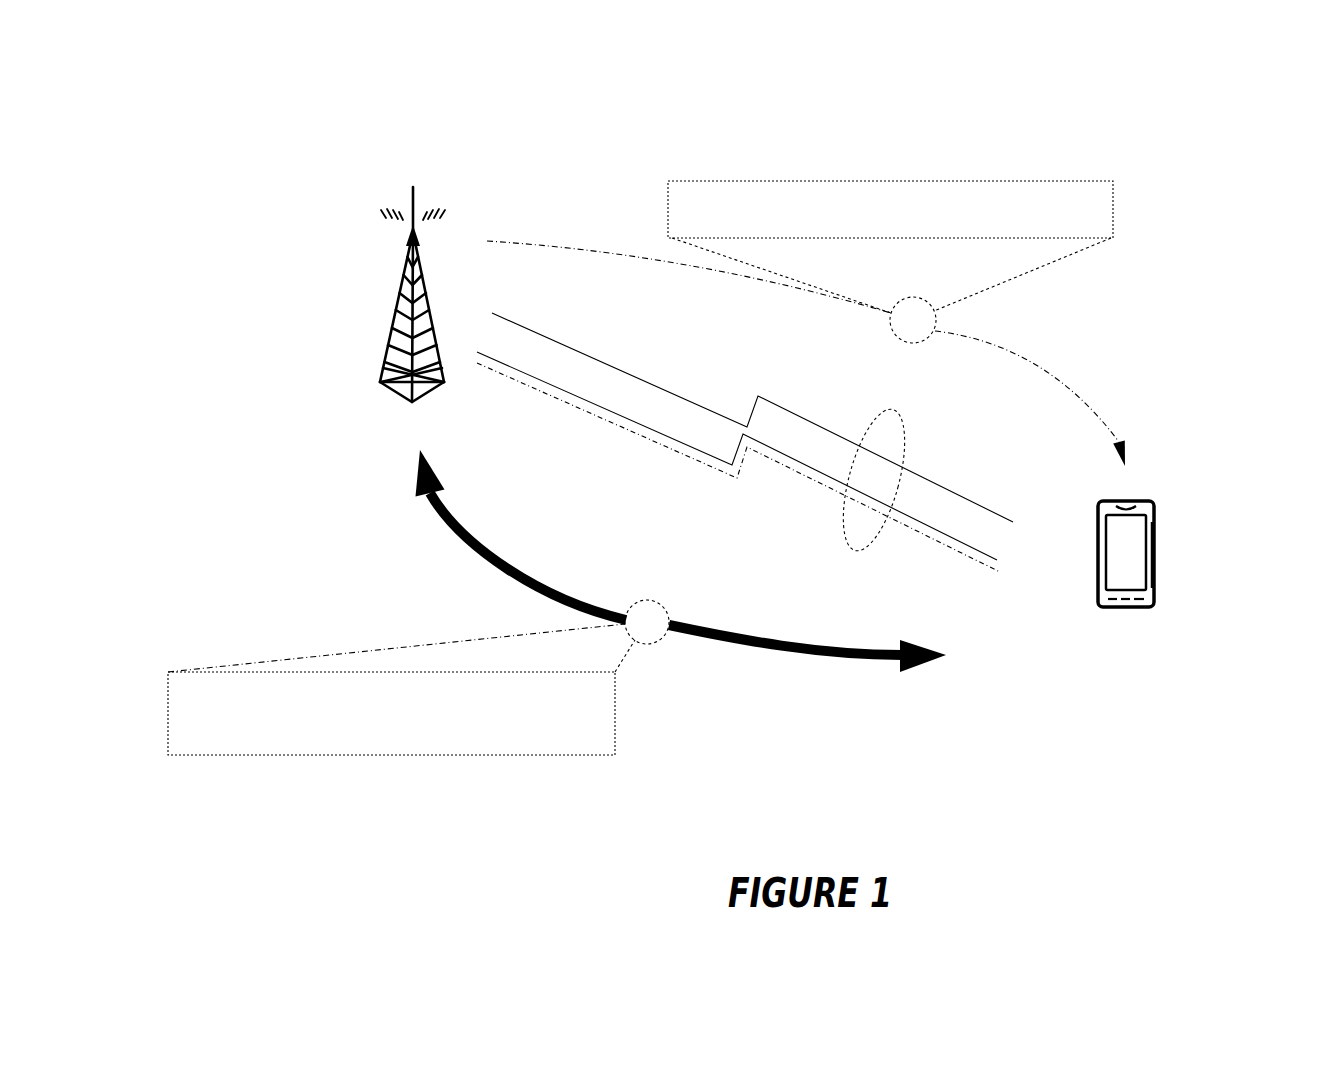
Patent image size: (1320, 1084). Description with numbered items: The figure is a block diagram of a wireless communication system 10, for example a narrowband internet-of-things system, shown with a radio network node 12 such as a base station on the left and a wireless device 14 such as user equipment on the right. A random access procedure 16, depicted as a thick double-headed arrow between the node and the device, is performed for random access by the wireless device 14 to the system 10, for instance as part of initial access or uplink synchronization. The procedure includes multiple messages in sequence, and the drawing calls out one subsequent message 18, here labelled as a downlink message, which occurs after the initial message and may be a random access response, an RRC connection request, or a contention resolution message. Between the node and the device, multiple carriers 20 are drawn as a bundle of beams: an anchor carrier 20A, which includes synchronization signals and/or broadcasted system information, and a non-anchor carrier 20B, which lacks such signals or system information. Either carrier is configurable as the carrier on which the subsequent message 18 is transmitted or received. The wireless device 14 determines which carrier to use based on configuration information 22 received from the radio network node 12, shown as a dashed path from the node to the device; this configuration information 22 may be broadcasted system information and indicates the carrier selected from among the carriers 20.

The wireless communication system 10 is at (268, 160).
The radio network node 12 is at (378, 388).
The wireless device 14 is at (1158, 585).
The random access procedure 16 is at (815, 657).
The subsequent message 18 is at (418, 677).
The carriers 20 is at (847, 533).
The anchor carrier 20A is at (555, 341).
The non-anchor carrier 20B is at (577, 395).
The configuration information 22 is at (806, 323).